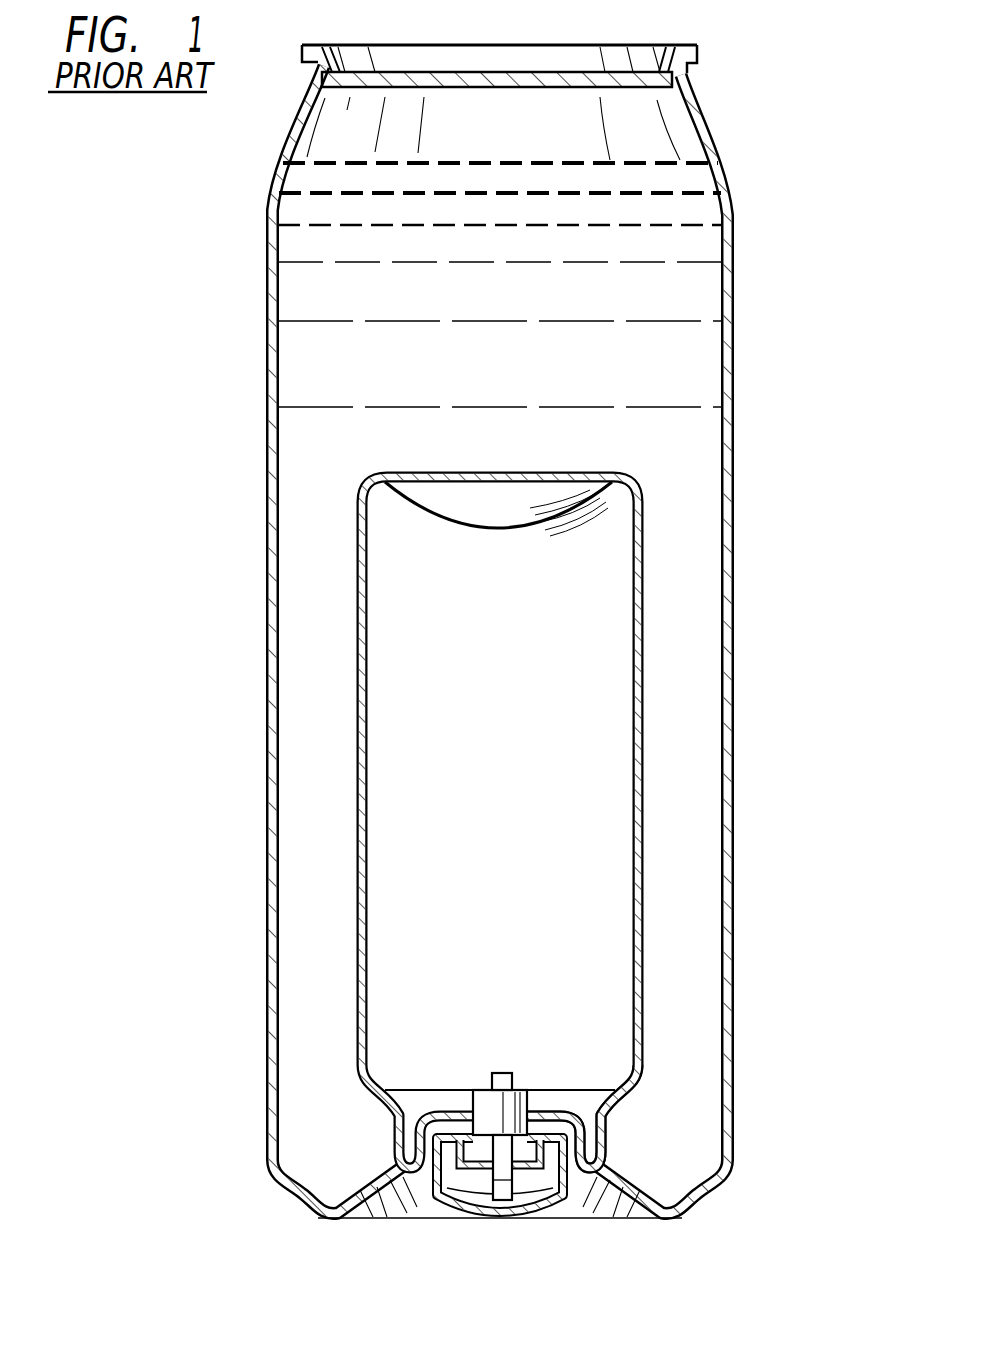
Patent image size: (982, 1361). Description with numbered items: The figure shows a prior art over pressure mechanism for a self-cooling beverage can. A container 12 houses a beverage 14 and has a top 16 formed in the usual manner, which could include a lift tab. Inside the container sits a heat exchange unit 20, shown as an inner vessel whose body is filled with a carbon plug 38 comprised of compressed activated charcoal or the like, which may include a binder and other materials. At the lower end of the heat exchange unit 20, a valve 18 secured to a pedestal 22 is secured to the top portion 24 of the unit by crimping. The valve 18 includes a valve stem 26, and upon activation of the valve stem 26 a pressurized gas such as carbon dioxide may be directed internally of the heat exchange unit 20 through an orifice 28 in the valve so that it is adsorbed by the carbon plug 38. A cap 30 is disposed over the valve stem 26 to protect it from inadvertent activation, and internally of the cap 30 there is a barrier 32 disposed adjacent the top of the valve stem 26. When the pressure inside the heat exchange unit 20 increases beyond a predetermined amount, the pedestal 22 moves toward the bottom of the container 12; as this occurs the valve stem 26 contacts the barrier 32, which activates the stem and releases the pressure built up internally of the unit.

The container 12 is at (264, 275).
The beverage 14 is at (698, 352).
The top 16 is at (300, 55).
The valve 18 is at (460, 1233).
The heat exchange unit 20 is at (357, 693).
The pedestal 22 is at (540, 1112).
The top portion 24 is at (613, 1112).
The valve stem 26 is at (565, 1220).
The orifice 28 is at (500, 1073).
The cap 30 is at (502, 1207).
The barrier 32 is at (437, 1193).
The carbon plug 38 is at (607, 731).